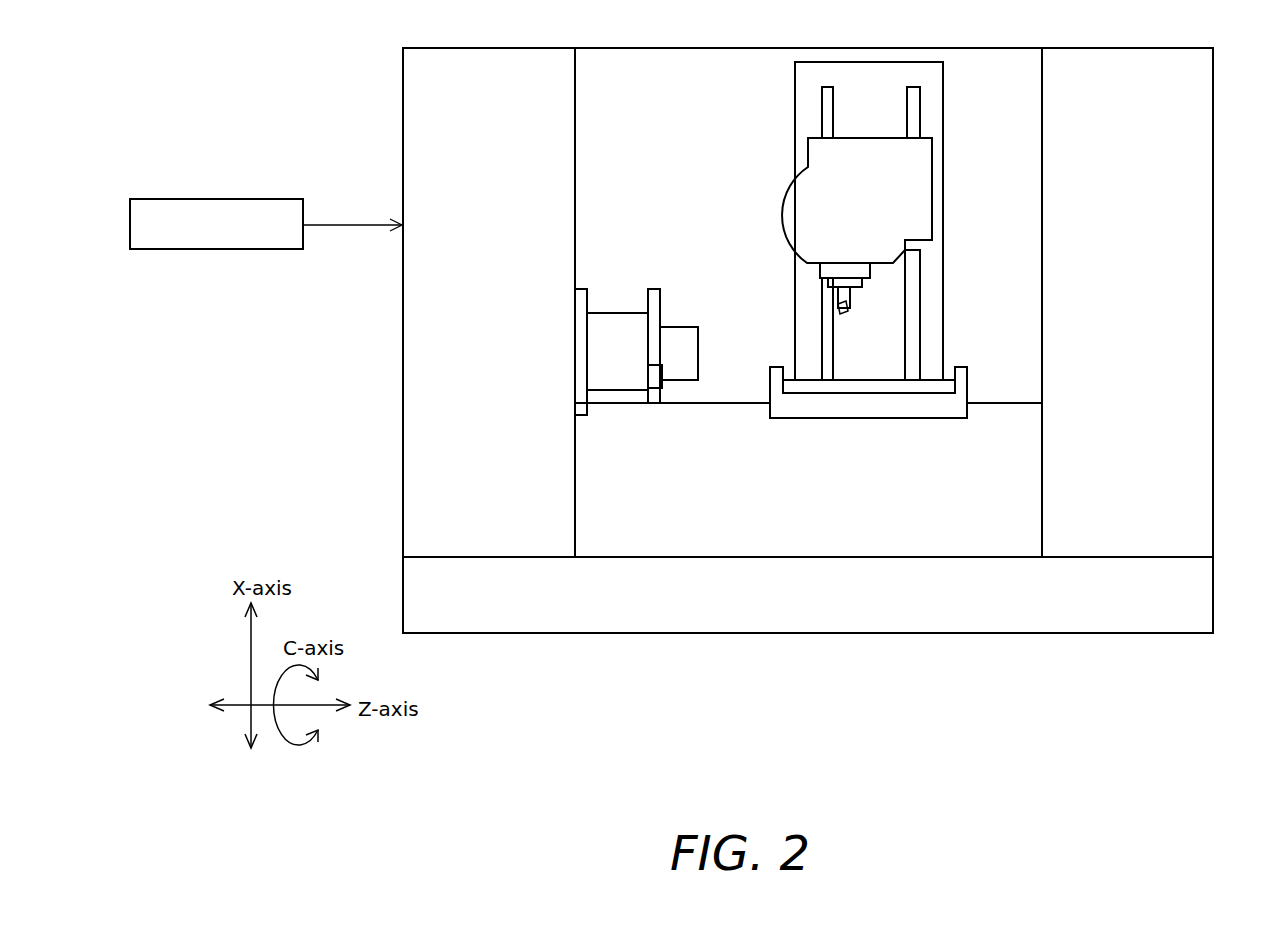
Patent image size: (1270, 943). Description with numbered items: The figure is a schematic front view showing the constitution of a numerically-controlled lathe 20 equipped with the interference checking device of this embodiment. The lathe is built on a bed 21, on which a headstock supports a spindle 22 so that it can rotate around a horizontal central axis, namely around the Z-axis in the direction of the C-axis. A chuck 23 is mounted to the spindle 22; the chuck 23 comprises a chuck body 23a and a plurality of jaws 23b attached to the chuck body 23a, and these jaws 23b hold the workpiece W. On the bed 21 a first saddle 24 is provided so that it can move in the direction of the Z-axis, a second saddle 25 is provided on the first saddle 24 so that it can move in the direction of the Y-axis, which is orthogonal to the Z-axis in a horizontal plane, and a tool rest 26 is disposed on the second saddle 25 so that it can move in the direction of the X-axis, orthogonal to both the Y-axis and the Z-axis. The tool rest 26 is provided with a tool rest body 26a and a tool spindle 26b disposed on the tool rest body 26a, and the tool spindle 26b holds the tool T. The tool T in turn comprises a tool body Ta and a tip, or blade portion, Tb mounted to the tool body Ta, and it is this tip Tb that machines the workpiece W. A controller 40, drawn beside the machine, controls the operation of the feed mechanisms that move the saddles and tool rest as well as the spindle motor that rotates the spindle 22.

The NC lathe 20 is at (361, 29).
The bed 21 is at (655, 624).
The spindle 22 is at (582, 415).
The chuck 23 is at (639, 287).
The chuck body 23a is at (624, 312).
The jaws 23b is at (670, 310).
The first saddle 24 is at (851, 412).
The second saddle 25 is at (888, 388).
The tool rest 26 is at (843, 221).
The tool rest body 26a is at (790, 205).
The tool spindle 26b is at (845, 263).
The controller 40 is at (213, 199).
The tool T is at (866, 308).
The tool body Ta is at (850, 298).
The tip Tb is at (840, 310).
The workpiece W is at (678, 372).